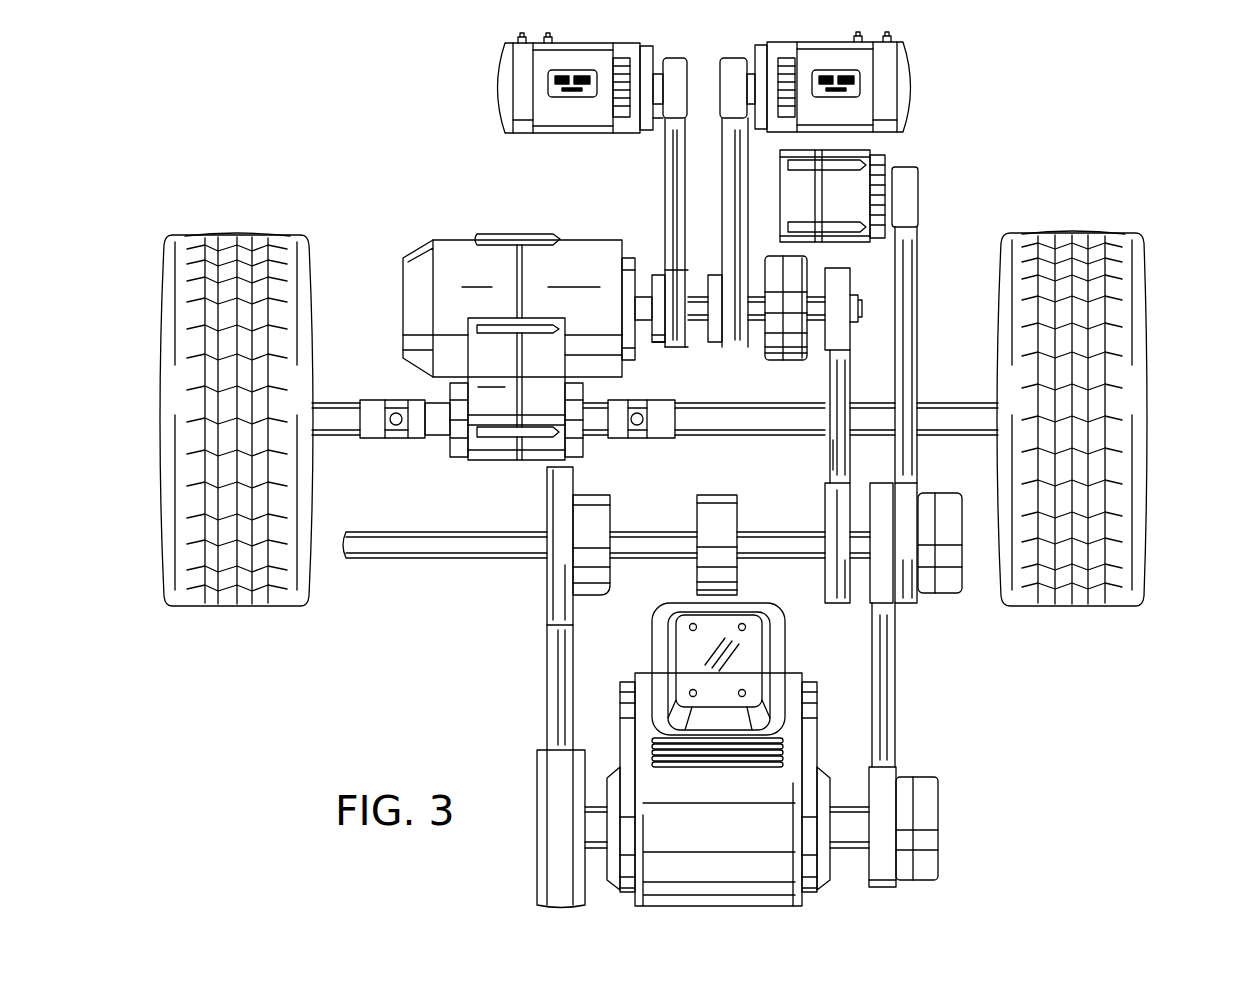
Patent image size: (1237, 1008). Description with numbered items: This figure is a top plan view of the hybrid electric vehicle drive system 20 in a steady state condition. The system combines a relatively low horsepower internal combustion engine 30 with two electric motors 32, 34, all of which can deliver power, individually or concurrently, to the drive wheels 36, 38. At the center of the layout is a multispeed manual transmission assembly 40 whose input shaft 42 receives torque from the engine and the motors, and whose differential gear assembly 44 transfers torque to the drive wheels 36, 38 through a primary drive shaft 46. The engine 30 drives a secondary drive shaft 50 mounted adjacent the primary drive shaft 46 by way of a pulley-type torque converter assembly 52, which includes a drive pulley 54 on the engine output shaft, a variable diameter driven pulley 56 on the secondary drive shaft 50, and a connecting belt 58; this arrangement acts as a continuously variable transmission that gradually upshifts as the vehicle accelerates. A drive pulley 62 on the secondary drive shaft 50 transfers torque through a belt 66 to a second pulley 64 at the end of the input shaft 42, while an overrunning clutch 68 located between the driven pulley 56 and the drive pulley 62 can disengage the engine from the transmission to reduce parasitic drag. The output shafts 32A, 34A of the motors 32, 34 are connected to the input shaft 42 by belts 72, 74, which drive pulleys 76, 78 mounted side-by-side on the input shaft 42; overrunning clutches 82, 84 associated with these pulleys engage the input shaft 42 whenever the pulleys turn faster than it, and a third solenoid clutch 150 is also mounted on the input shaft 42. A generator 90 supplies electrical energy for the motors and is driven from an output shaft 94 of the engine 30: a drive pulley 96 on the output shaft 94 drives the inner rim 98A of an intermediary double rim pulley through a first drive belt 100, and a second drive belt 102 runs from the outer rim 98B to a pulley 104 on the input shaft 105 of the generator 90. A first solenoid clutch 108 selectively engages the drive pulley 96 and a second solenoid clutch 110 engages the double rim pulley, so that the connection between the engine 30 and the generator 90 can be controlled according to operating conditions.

The drive system 20 is at (1077, 120).
The internal combustion engine 30 is at (750, 659).
The electric motor 32 is at (497, 63).
The output shaft of motor 32A is at (666, 58).
The electric motor 34 is at (908, 53).
The output shaft of motor 34A is at (742, 58).
The drive wheel 36 is at (212, 235).
The drive wheel 38 is at (1115, 243).
The transmission assembly 40 is at (437, 240).
The input shaft 42 is at (858, 300).
The differential gear assembly 44 is at (482, 459).
The primary drive shaft 46 is at (650, 440).
The secondary drive shaft 50 is at (435, 555).
The pulley-type torque converter assembly 52 is at (447, 718).
The drive pulley 54 is at (539, 766).
The variable diameter driven pulley 56 is at (546, 604).
The belt 58 is at (547, 673).
The drive pulley 62 is at (828, 571).
The second pulley 64 is at (850, 337).
The belt 66 is at (848, 462).
The overrunning clutch 68 is at (723, 497).
The belt 72 is at (663, 137).
The belt 74 is at (730, 232).
The pulley 76 is at (655, 280).
The pulley 78 is at (690, 276).
The overrunning clutch 82 is at (653, 344).
The overrunning clutch 84 is at (712, 344).
The generator 90 is at (865, 151).
The output shaft 94 is at (850, 823).
The drive pulley 96 is at (895, 888).
The inner rim 98A is at (873, 484).
The outer rim 98B is at (917, 606).
The first drive belt 100 is at (885, 699).
The second drive belt 102 is at (905, 338).
The pulley 104 is at (918, 213).
The input shaft of generator 105 is at (888, 181).
The first solenoid clutch 108 is at (923, 819).
The second solenoid clutch 110 is at (957, 598).
The third solenoid clutch 150 is at (765, 358).